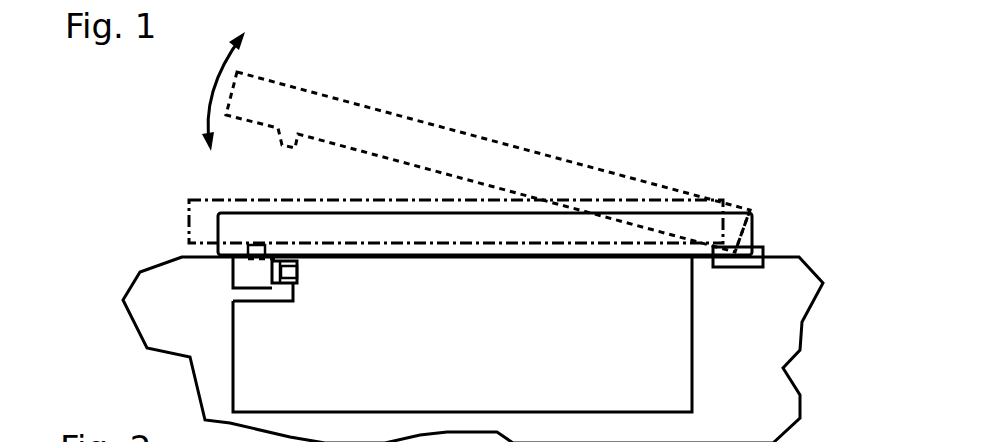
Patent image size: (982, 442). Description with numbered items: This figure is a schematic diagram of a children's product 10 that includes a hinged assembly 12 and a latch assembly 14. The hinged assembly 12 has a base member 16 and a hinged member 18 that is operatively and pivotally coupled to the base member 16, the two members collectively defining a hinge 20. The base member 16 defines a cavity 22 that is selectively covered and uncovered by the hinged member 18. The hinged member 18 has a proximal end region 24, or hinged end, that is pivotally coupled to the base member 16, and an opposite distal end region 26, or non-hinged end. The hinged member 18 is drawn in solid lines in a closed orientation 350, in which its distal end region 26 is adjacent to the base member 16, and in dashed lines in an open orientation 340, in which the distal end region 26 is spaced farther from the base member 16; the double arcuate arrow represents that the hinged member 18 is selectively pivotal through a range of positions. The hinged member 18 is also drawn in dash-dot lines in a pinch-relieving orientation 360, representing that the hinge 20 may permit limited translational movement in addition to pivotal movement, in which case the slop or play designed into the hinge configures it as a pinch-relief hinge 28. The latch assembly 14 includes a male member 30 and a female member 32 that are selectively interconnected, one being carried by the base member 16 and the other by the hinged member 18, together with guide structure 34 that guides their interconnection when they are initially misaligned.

The children's product 10 is at (108, 86).
The hinged assembly 12 is at (160, 85).
The latch assembly 14 is at (305, 270).
The base member 16 is at (160, 258).
The hinged member 18 is at (499, 138).
The hinge 20 is at (737, 268).
The cavity 22 is at (548, 404).
The proximal end region 24 is at (690, 196).
The distal end region 26 is at (256, 74).
The pinch-relief hinge 28 is at (725, 166).
The male member 30 is at (272, 265).
The female member 32 is at (274, 273).
The guide structure 34 is at (284, 278).
The open orientation 340 is at (356, 103).
The closed orientation 350 is at (212, 237).
The pinch-relieving orientation 360 is at (186, 224).